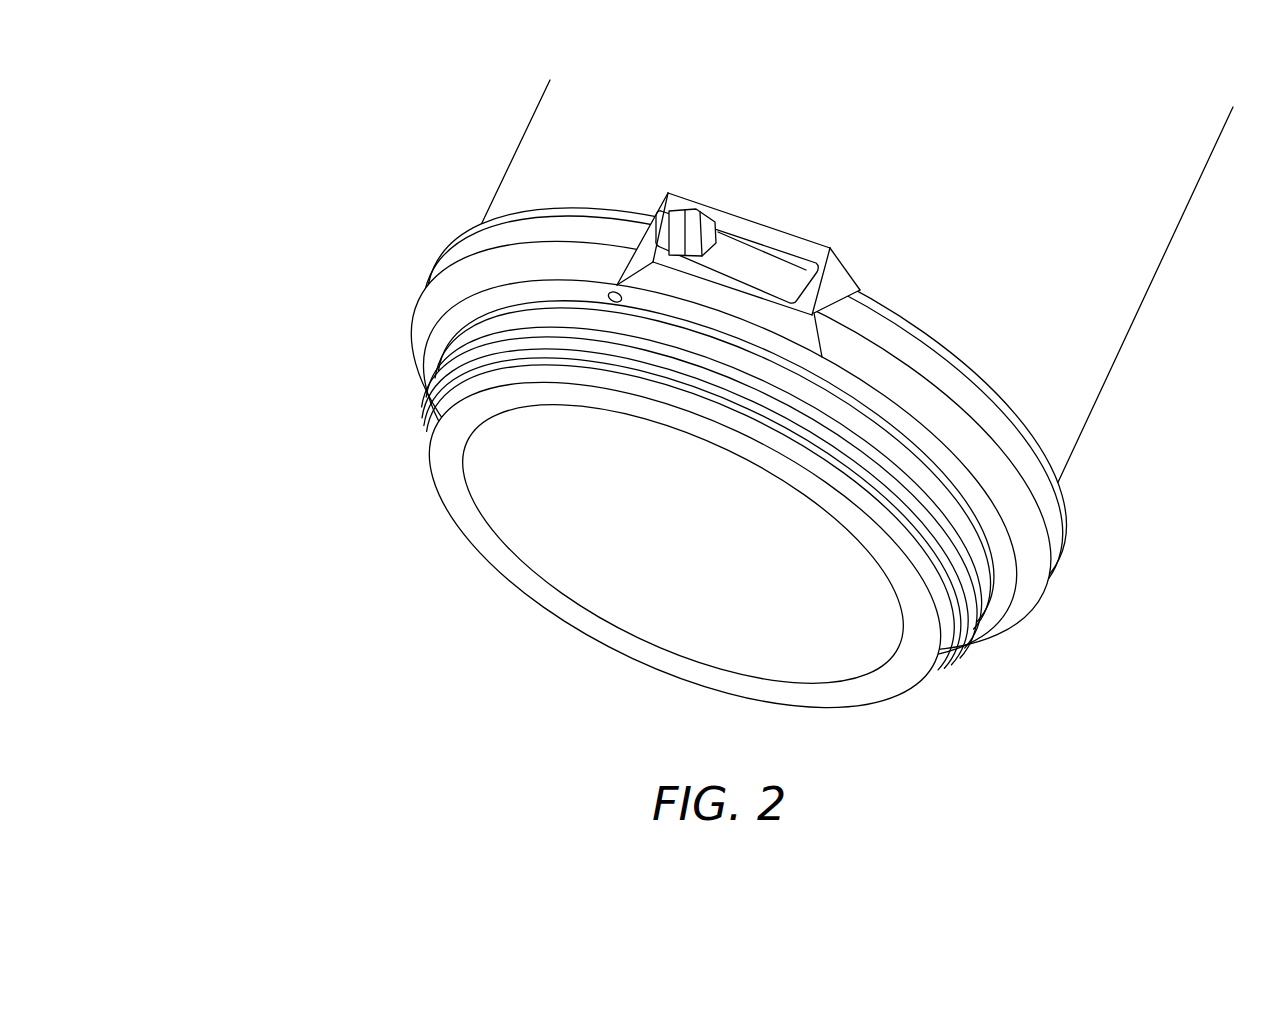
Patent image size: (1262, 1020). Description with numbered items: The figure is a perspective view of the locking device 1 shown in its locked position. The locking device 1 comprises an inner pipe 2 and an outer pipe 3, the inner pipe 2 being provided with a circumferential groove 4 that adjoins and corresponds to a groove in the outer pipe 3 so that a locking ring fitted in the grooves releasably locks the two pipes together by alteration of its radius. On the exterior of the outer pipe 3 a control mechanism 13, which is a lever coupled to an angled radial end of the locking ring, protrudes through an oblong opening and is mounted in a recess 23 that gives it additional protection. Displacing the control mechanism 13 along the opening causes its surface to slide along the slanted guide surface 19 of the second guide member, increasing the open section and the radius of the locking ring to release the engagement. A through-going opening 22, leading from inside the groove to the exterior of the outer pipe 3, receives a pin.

The locking device 1 is at (311, 167).
The inner pipe 2 is at (496, 556).
The outer pipe 3 is at (1130, 302).
The circumferential groove 4 is at (940, 612).
The control mechanism 13 is at (688, 222).
The slanted guide surface 19 is at (760, 267).
The through-going opening 22 is at (603, 295).
The recess 23 is at (833, 250).